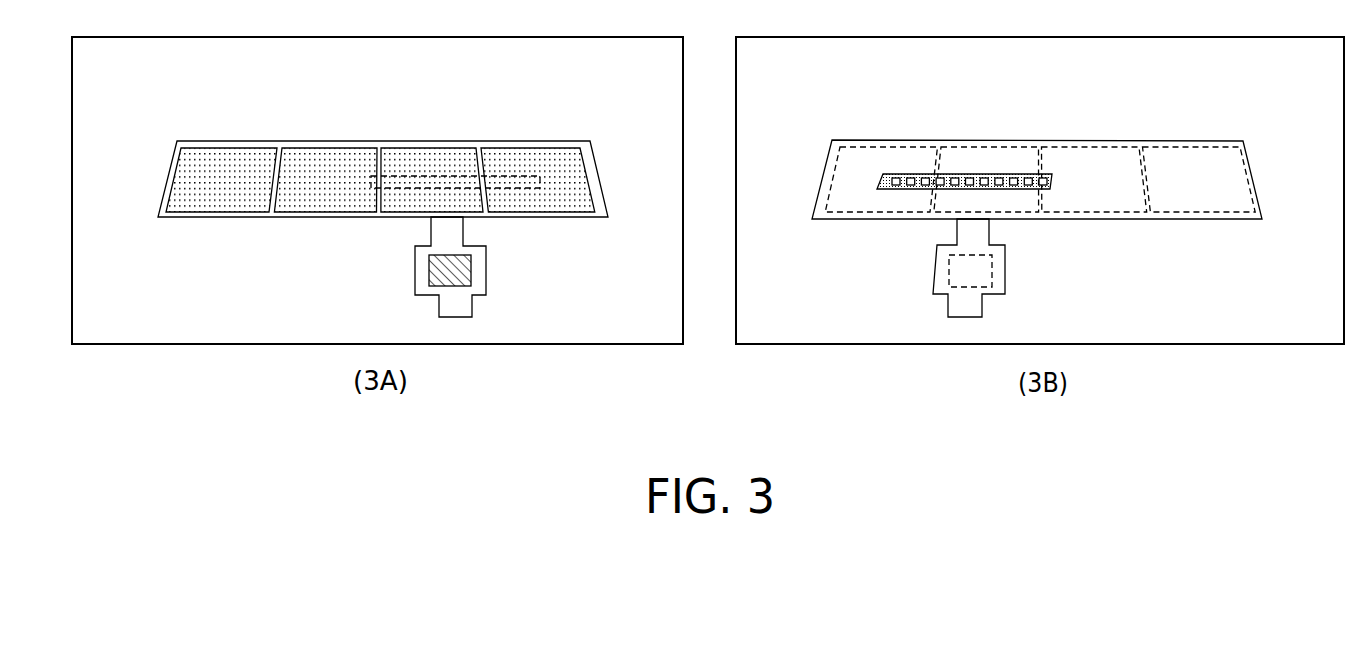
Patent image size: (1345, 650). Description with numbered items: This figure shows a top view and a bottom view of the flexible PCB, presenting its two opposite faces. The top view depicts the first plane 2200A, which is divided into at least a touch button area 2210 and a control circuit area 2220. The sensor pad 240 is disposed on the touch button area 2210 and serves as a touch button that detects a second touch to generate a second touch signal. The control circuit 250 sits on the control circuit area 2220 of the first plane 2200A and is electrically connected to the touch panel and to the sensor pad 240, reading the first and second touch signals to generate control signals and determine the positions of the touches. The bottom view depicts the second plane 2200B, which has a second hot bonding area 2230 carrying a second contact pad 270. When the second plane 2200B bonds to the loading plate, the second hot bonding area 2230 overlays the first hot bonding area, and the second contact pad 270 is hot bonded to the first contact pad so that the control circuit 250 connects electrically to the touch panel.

The first plane 2200A is at (197, 313).
The second plane 2200B is at (858, 313).
The sensor pad 240 is at (218, 168).
The touch button area 2210 is at (378, 143).
The control circuit area 2220 is at (420, 270).
The control circuit 250 is at (472, 269).
The second contact pad 270 is at (953, 177).
The second hot bonding area 2230 is at (1003, 176).